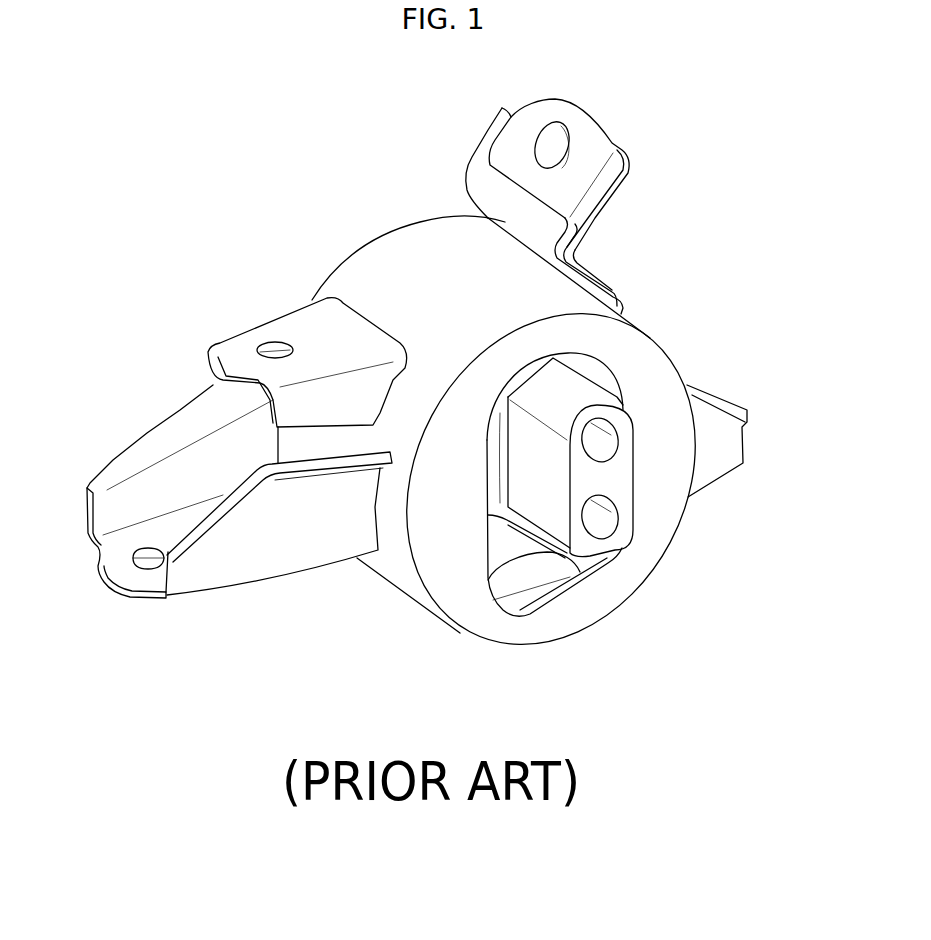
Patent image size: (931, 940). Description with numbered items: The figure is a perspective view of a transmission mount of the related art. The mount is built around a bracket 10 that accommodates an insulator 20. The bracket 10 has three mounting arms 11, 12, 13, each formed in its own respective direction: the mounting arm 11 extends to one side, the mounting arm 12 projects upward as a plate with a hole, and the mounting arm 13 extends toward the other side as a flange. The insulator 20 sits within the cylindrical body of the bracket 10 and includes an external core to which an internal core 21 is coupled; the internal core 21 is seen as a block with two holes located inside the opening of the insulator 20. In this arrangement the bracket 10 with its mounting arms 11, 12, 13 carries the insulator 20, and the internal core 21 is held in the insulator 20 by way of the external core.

The bracket 10 is at (398, 257).
The mounting arm 11 is at (270, 552).
The mounting arm 12 is at (590, 145).
The mounting arm 13 is at (718, 450).
The insulator 20 is at (535, 580).
The internal core 21 is at (580, 393).